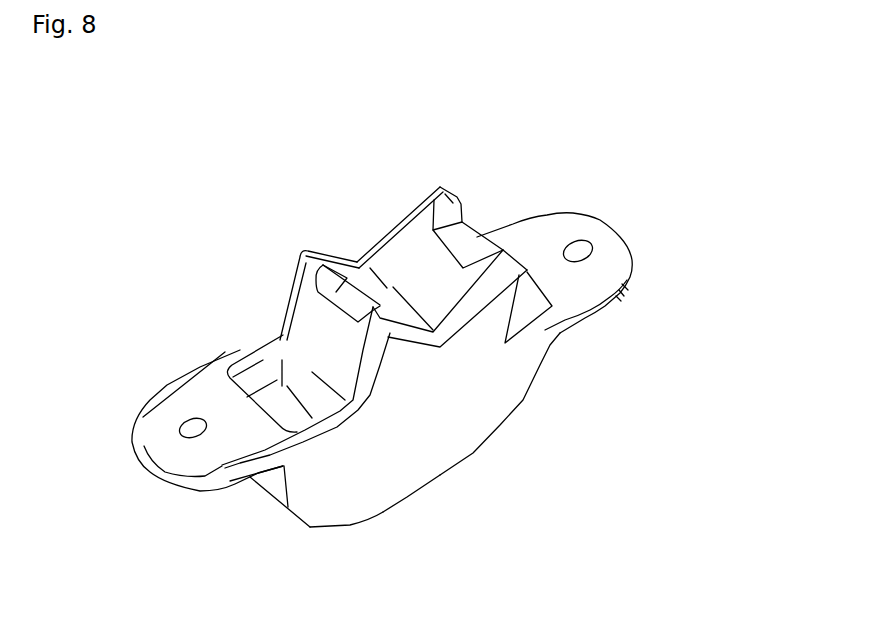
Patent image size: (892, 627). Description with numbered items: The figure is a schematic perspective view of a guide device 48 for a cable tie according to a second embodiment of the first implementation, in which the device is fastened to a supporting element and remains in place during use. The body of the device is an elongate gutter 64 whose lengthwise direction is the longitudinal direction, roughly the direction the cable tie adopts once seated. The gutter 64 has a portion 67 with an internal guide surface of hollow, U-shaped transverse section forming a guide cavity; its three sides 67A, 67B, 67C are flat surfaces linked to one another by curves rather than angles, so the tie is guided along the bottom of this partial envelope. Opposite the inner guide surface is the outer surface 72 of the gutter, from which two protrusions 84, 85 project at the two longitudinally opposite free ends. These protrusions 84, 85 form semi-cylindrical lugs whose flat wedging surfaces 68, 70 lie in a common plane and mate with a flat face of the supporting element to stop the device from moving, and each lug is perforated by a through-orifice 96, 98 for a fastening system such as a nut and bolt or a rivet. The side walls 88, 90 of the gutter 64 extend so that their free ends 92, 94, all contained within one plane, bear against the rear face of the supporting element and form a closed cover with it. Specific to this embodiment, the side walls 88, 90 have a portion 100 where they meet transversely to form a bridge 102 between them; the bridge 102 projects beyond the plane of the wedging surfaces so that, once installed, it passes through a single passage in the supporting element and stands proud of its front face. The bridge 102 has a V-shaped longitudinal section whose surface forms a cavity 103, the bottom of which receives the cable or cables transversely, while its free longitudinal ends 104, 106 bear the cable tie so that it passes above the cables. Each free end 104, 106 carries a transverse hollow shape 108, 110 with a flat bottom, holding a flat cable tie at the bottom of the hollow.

The guide device 48 is at (628, 200).
The elongate gutter 64 is at (230, 353).
The portion of the gutter 67 is at (285, 417).
The side of the portion 67A is at (248, 349).
The side of the portion 67B is at (272, 500).
The side of the portion 67C is at (352, 500).
The wedging surface 68 is at (183, 397).
The wedging surface 70 is at (547, 243).
The outer surface of the gutter 72 is at (263, 478).
The protrusion 84 is at (160, 411).
The protrusion 85 is at (567, 287).
The side wall of the gutter 88 is at (438, 437).
The side wall of the gutter 90 is at (262, 345).
The free end of the wall 92 is at (282, 412).
The free end of the wall 94 is at (523, 332).
The through-orifice 96 is at (180, 430).
The through-orifice 98 is at (595, 247).
The portion where the side walls meet 100 is at (275, 278).
The bridge 102 is at (430, 375).
The cavity 103 is at (390, 285).
The free longitudinal end of the cavity 104 is at (315, 248).
The free longitudinal end of the cavity 106 is at (452, 190).
The transverse hollow shape 108 is at (350, 290).
The transverse hollow shape 110 is at (462, 240).